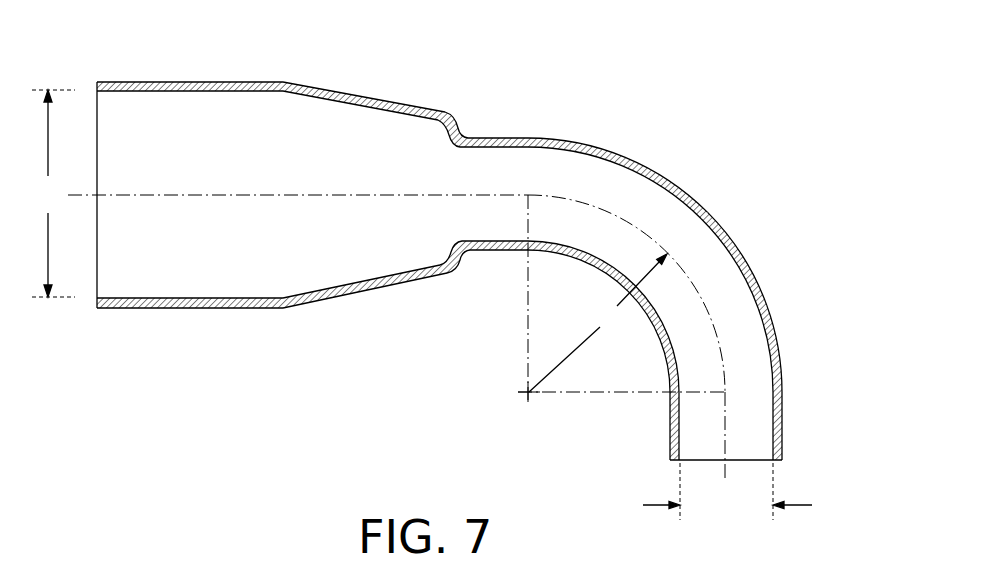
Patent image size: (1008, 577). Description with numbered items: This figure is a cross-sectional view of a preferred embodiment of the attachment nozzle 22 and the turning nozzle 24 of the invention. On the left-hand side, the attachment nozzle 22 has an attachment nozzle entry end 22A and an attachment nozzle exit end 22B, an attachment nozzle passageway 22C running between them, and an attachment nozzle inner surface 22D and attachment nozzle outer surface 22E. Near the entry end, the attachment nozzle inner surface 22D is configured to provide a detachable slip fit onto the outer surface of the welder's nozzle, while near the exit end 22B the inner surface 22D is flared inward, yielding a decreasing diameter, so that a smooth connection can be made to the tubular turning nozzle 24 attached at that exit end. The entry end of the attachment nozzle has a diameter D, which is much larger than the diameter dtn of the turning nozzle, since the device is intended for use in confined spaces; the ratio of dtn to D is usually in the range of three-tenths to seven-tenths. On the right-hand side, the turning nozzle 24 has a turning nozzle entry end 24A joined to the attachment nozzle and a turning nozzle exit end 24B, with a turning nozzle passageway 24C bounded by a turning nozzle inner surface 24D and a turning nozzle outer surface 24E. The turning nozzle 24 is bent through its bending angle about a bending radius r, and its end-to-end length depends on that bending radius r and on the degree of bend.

The attachment nozzle 22 is at (367, 137).
The attachment nozzle entry end 22A is at (97, 122).
The attachment nozzle exit end 22B is at (457, 170).
The attachment nozzle passageway 22C is at (220, 272).
The attachment nozzle inner surface 22D is at (342, 283).
The attachment nozzle outer surface 22E is at (257, 82).
The turning nozzle 24 is at (713, 253).
The turning nozzle entry end 24A is at (473, 187).
The turning nozzle exit end 24B is at (755, 460).
The turning nozzle passageway 24C is at (776, 337).
The turning nozzle inner surface 24D is at (653, 183).
The turning nozzle outer surface 24E is at (762, 288).
The attachment nozzle entry end diameter D is at (53, 193).
The bending radius r is at (598, 323).
The turning nozzle diameter dtn is at (727, 494).